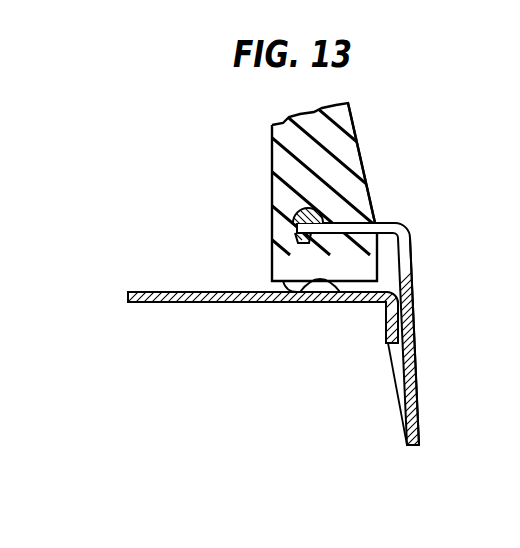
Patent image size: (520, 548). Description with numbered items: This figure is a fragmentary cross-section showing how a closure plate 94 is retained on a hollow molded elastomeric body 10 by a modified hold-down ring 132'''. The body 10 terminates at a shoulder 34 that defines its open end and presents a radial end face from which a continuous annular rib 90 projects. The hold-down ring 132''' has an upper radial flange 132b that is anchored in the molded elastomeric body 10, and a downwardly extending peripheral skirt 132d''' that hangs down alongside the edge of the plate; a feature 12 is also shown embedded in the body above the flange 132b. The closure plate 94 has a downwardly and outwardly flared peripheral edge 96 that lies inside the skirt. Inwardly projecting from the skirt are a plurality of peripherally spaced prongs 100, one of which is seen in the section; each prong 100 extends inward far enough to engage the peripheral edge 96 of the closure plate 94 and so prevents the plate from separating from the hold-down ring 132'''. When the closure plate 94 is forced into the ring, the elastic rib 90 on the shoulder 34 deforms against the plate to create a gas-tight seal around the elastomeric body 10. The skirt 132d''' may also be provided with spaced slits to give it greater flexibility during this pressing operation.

The molded elastomeric body 10 is at (344, 104).
The shoulder 34 is at (356, 140).
The adhesive bead / fastener 12 is at (293, 206).
The upper radial flange 132b is at (372, 221).
The hold-down ring 132''' is at (456, 341).
The skirt 132d''' is at (458, 378).
The closure plate 94 is at (201, 291).
The peripheral edge 96 is at (390, 323).
The prongs 100 is at (393, 347).
The annular ribs 90 is at (310, 303).